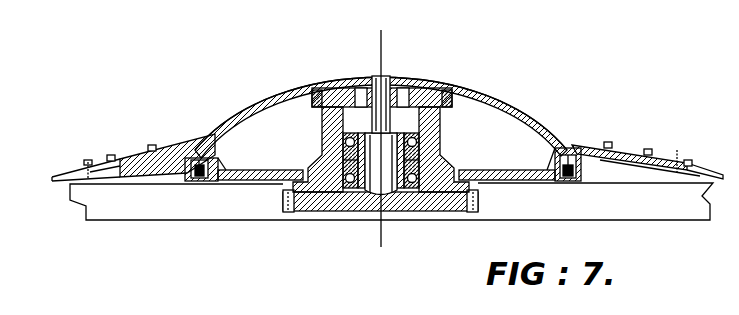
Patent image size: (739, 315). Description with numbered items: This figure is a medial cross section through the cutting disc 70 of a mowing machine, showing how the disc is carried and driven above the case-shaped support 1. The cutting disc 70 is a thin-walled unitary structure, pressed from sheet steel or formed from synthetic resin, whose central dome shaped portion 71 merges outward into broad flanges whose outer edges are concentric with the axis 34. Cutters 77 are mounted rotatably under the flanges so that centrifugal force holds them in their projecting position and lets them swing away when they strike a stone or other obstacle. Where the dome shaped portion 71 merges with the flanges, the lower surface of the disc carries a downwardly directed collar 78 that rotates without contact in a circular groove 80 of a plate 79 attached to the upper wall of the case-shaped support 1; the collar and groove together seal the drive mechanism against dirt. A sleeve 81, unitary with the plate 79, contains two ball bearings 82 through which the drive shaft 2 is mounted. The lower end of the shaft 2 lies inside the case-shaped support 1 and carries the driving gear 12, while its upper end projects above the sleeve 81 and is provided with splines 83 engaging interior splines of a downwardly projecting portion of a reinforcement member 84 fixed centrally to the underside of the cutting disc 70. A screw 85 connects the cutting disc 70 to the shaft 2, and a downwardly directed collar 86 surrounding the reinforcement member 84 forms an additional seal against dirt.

The case-shaped support 1 is at (515, 206).
The drive shaft 2 is at (374, 197).
The driving gear 12 is at (303, 210).
The axis 34 is at (382, 30).
The cutting disc 70 is at (526, 91).
The central dome shaped portion 71 is at (538, 122).
The cutters 77 is at (63, 174).
The downwardly directed collar 78 is at (210, 133).
The plate 79 is at (262, 182).
The circular groove 80 is at (215, 180).
The sleeve 81 is at (443, 138).
The ball bearings 82 is at (335, 180).
The splines 83 is at (410, 86).
The reinforcement member 84 is at (360, 87).
The screw 85 is at (390, 80).
The downwardly directed collar 86 is at (468, 88).